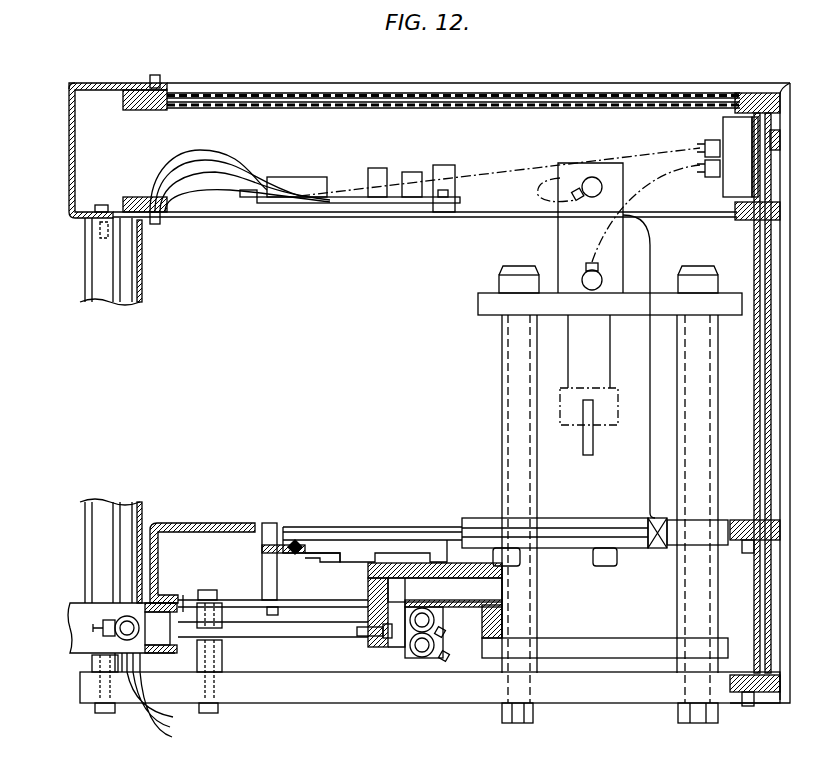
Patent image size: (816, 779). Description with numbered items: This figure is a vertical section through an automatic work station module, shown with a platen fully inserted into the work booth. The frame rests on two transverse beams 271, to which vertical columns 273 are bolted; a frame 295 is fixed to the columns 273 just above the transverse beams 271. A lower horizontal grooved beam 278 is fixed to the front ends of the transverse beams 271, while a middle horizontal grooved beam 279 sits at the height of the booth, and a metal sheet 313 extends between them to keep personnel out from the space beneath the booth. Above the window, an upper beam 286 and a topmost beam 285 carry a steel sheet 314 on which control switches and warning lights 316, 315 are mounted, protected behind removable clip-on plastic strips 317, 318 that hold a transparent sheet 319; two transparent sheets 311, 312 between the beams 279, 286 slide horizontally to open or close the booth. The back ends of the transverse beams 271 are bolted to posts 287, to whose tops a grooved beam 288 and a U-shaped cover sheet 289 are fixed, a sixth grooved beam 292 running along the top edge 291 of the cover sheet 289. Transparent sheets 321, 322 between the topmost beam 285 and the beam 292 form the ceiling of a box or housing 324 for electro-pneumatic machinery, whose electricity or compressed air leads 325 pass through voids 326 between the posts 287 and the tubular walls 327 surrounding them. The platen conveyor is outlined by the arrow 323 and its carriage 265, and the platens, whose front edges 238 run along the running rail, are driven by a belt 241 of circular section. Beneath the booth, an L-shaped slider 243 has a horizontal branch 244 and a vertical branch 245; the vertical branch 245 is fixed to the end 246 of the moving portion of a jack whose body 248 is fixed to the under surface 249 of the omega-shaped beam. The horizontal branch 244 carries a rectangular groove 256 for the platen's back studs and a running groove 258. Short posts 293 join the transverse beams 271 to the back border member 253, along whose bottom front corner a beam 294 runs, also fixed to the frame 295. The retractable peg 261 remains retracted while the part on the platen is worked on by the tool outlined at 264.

The U-shaped cover sheet 289 is at (69, 130).
The top edge 291 is at (100, 81).
The sixth grooved beam 292 is at (140, 90).
The grooved beam 288 is at (152, 198).
The electricity or compressed air leads 325 is at (205, 162).
The voids 326 is at (140, 265).
The tubular walls 327 is at (142, 285).
The transparent sheet 321 is at (355, 94).
The transparent sheet 322 is at (374, 108).
The carriage assembly 323 is at (498, 88).
The box or housing 324 is at (494, 144).
The removable clip-on strip of plastic 317 is at (748, 92).
The topmost beam 285 is at (772, 95).
The control switches and warning lights 316 is at (750, 131).
The control switches and warning lights 315 is at (735, 148).
The steel sheet 314 is at (750, 165).
The transparent sheet 319 is at (752, 170).
The upper beam 286 is at (760, 230).
The removable clip-on strip of plastic 318 is at (778, 235).
The transparent sheet 312 is at (766, 325).
The transparent sheet 311 is at (760, 366).
The tool 264 is at (600, 420).
The vertical columns 273 is at (523, 487).
The groove 256 is at (505, 550).
The front edges 238 is at (447, 530).
The running groove 258 is at (410, 565).
The carriage 265 is at (353, 520).
The back border member 253 is at (228, 520).
The middle horizontal grooved beam 279 is at (775, 525).
The belt 241 is at (285, 565).
The L-shaped slider 243 is at (360, 558).
The horizontal branch 244 is at (445, 592).
The beam 294 is at (500, 622).
The vertical branch 245 is at (370, 592).
The under surface 249 is at (183, 600).
The jack body 248 is at (68, 620).
The peg 261 is at (440, 640).
The end of moving portion 246 is at (366, 642).
The frame 295 is at (625, 655).
The metal sheet 313 is at (770, 582).
The lower horizontal grooved beam 278 is at (778, 680).
The short posts 293 is at (218, 648).
The posts 287 is at (90, 660).
The transverse beams 271 is at (382, 700).